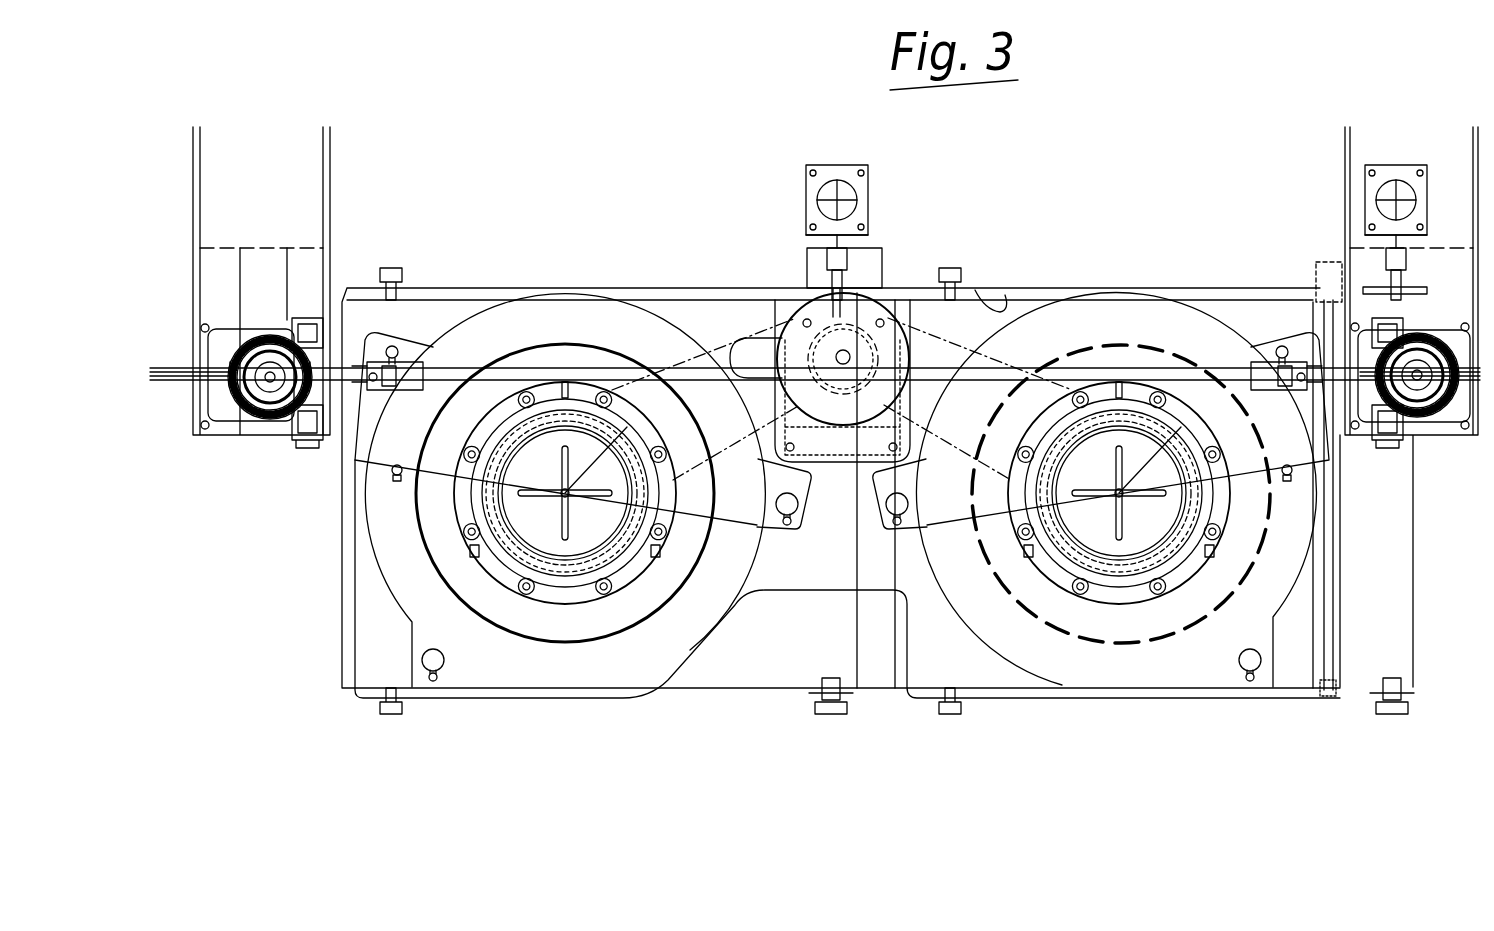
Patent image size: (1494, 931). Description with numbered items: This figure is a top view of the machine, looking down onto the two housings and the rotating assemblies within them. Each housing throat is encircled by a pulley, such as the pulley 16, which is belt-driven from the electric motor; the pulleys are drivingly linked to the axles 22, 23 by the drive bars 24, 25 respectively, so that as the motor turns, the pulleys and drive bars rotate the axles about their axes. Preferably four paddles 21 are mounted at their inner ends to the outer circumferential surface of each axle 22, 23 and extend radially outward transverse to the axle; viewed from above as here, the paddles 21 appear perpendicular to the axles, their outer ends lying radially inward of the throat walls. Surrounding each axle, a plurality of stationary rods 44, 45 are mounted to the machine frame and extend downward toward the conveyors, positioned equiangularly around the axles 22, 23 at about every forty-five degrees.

The pulley 16 is at (842, 313).
The paddles 21 is at (562, 460).
The axle 22 is at (1113, 495).
The axle 23 is at (565, 495).
The drive bar 24 is at (1152, 458).
The drive bar 25 is at (596, 462).
The stationary rods 44 is at (1063, 755).
The stationary rods 45 is at (693, 733).